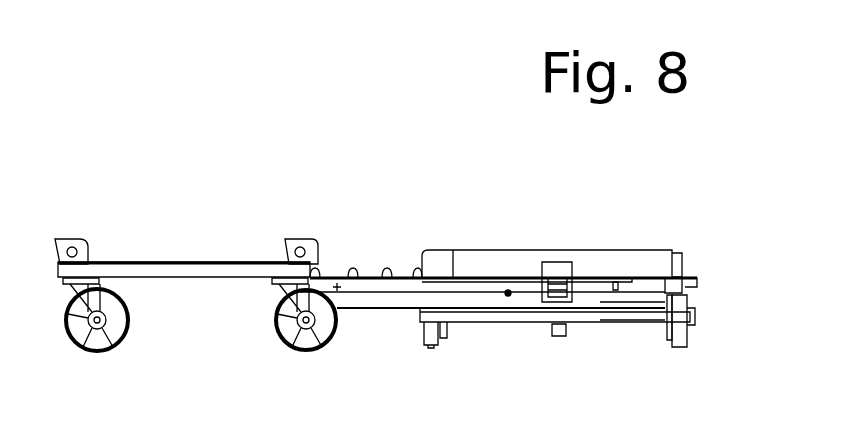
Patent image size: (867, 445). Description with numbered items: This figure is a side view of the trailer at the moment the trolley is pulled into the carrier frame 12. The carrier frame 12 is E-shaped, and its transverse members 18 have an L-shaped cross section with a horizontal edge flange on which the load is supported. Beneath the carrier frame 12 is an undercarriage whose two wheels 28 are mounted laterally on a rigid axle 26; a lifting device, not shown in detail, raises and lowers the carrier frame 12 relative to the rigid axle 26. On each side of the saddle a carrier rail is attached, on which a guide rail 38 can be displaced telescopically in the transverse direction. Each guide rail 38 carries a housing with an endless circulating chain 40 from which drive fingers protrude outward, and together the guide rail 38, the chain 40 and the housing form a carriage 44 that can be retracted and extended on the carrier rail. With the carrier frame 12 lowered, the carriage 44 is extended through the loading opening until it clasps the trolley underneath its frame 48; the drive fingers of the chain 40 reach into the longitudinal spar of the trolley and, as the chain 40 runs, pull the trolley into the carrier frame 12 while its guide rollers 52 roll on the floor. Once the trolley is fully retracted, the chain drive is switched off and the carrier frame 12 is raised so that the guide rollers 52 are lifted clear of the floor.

The frame 48 is at (200, 263).
The guide rollers 52 is at (110, 332).
The guide rail 38 is at (388, 302).
The carrier frame 12 is at (617, 315).
The endless circulating chain 40 is at (357, 263).
The transverse members 18 is at (505, 260).
The wheels 28 is at (433, 345).
The carriage 44 is at (510, 297).
The rigid axle 26 is at (695, 320).